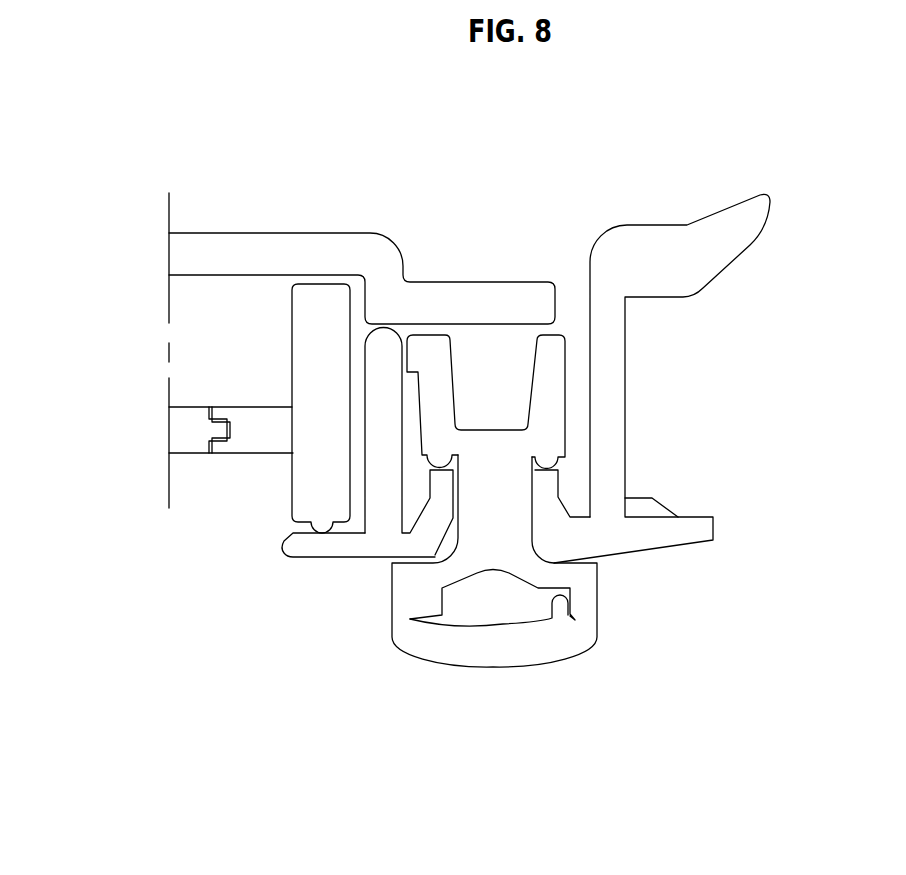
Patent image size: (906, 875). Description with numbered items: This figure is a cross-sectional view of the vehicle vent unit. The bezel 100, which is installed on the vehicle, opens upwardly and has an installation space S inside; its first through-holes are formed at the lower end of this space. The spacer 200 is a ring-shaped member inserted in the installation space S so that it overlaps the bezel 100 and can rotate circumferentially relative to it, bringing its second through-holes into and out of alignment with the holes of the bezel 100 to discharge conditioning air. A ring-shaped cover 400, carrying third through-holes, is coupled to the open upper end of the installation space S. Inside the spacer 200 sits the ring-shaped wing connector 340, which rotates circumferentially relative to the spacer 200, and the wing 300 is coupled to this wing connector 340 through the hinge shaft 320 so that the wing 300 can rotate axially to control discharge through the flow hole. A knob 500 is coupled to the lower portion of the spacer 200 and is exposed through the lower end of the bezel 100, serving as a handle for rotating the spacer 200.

The bezel 100 is at (647, 238).
The spacer 200 is at (550, 397).
The wing 300 is at (190, 434).
The hinge shaft 320 is at (243, 431).
The wing connector 340 is at (322, 307).
The cover 400 is at (384, 295).
The knob 500 is at (500, 625).
The installation space S is at (495, 370).